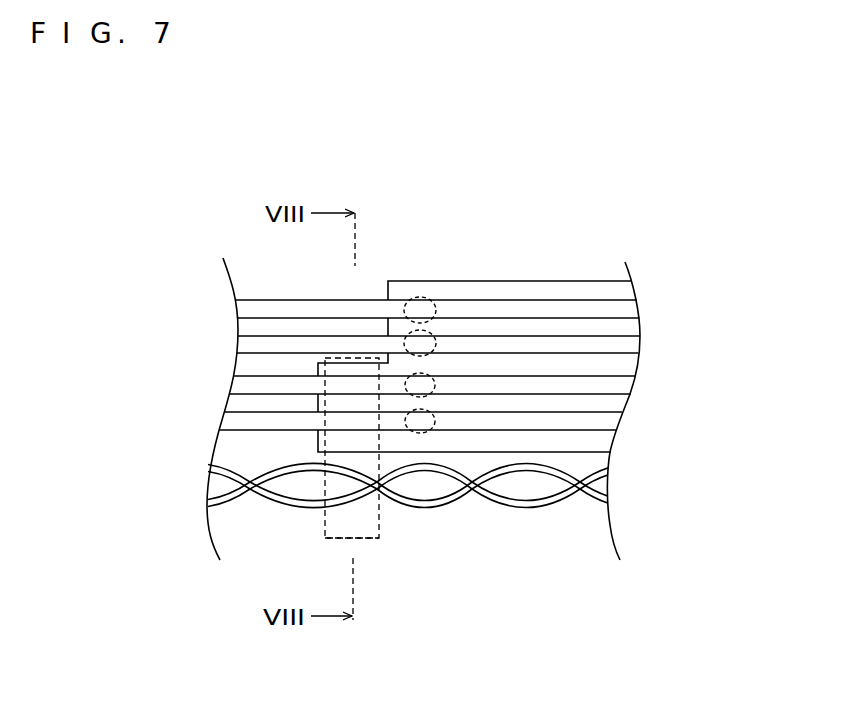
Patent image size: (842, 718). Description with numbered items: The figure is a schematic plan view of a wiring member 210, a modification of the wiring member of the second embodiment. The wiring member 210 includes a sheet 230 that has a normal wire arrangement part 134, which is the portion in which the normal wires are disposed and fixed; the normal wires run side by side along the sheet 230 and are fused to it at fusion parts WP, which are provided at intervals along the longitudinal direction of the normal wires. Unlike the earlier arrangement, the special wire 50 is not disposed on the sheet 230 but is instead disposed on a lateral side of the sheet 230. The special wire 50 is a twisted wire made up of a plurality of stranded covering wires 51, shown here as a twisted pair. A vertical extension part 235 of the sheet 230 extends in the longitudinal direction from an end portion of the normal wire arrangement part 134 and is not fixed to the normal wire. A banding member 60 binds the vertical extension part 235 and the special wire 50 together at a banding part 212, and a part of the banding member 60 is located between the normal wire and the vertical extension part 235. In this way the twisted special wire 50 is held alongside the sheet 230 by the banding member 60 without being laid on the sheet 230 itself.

The wiring member 210 is at (183, 143).
The sheet 230 is at (543, 280).
The normal wire arrangement part 134 is at (615, 365).
The vertical extension part 235 is at (316, 439).
The fusion part WP is at (448, 345).
The banding part 212 is at (393, 537).
The banding member 60 is at (326, 542).
The special wire 50 is at (565, 568).
The covering wire 51 is at (516, 500).